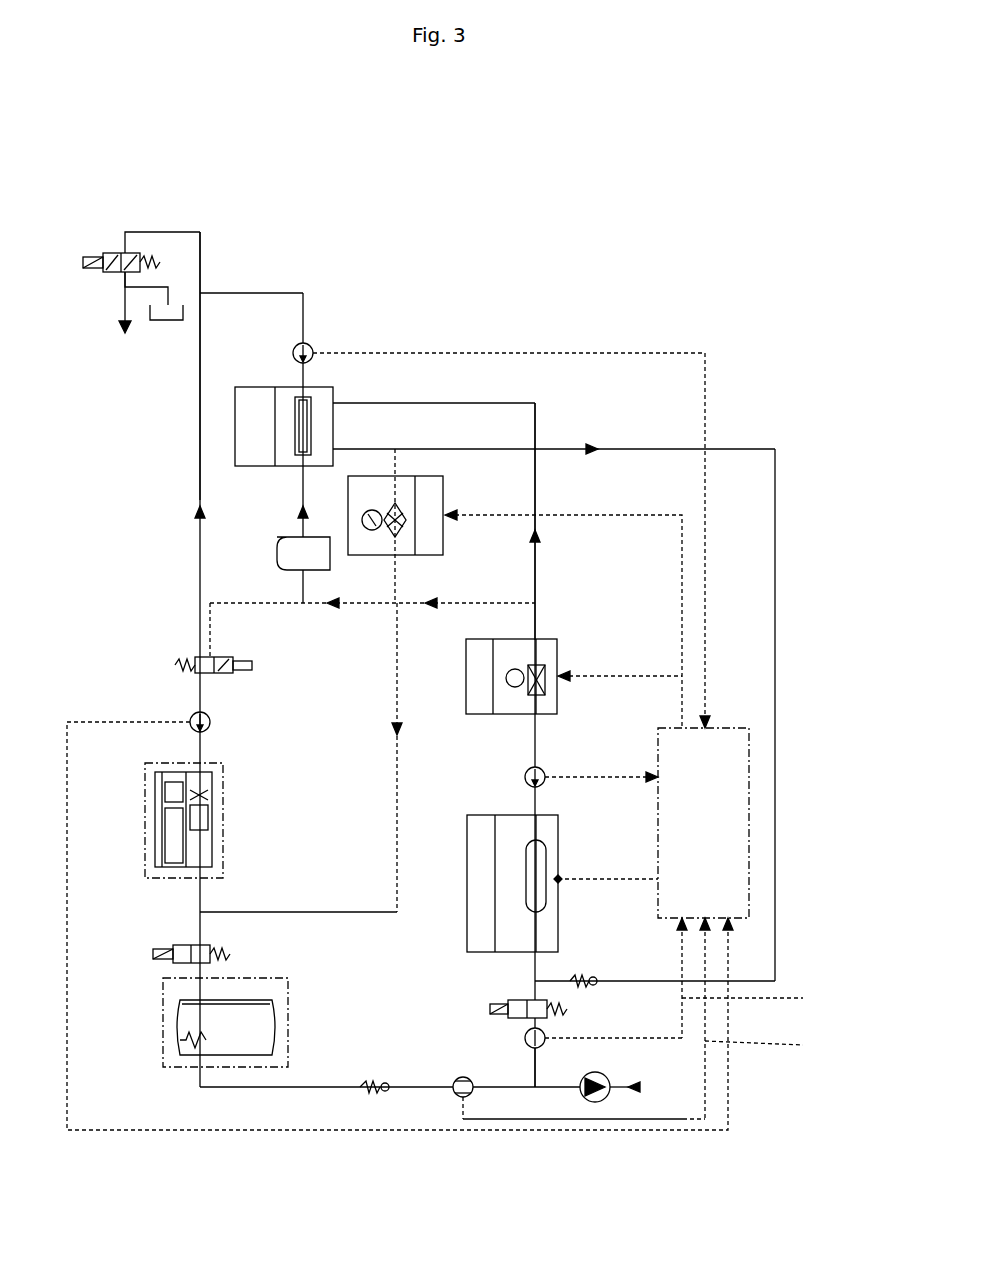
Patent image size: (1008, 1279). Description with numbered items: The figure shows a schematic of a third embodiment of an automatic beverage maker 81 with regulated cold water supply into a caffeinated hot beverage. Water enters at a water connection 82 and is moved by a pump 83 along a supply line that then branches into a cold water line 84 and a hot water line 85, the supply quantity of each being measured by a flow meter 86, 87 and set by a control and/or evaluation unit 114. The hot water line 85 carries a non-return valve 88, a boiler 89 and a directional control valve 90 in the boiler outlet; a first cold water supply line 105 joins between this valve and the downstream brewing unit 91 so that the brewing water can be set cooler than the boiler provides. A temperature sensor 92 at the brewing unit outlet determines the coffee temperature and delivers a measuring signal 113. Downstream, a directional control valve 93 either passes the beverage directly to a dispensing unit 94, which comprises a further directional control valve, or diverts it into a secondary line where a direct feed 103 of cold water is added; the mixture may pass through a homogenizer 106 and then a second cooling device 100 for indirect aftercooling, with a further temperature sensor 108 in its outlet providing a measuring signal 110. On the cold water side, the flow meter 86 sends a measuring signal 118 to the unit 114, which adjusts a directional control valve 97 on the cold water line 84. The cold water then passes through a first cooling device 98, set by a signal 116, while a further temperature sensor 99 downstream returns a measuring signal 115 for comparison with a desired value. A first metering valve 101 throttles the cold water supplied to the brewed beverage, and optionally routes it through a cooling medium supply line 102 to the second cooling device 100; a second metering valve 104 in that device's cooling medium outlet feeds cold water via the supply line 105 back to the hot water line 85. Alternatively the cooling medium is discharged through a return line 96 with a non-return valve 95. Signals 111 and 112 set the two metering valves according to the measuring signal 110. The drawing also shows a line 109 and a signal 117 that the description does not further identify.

The automatic beverage maker 81 is at (806, 658).
The water connection 82 is at (640, 1085).
The pump 83 is at (600, 1102).
The cold water line 84 is at (540, 1072).
The hot water line 85 is at (497, 1085).
The flow meter 86 is at (545, 1033).
The flow meter 87 is at (453, 1095).
The non-return valve 88 is at (380, 1082).
The boiler 89 is at (289, 992).
The directional control valve 90 is at (212, 947).
The brewing unit 91 is at (224, 812).
The temperature sensor 92 is at (211, 723).
The directional control valve 93 is at (222, 655).
The dispensing unit 94 is at (112, 250).
The non-return valve 95 is at (597, 978).
The return line 96 is at (170, 300).
The directional control valve 97 is at (510, 1000).
The first cooling device 98 is at (560, 925).
The further temperature sensor 99 is at (542, 770).
The second cooling device 100 is at (333, 432).
The first metering valve 101 is at (560, 652).
The cooling medium supply line 102 is at (540, 524).
The direct feed 103 is at (455, 600).
The second metering valve 104 is at (445, 497).
The first cold water supply line 105 is at (122, 332).
The homogenizer 106 is at (330, 566).
The further temperature sensor 108 is at (308, 345).
The hydraulic line 109 is at (203, 292).
The measuring signal 110 is at (636, 350).
The signal 111 is at (622, 680).
The signal 112 is at (612, 512).
The measuring signal 113 is at (432, 1133).
The control and/or evaluation unit 114 is at (750, 836).
The measuring signal 115 is at (604, 780).
The signal 116 is at (595, 877).
The signal line 117 is at (770, 1044).
The measuring signal 118 is at (760, 1000).